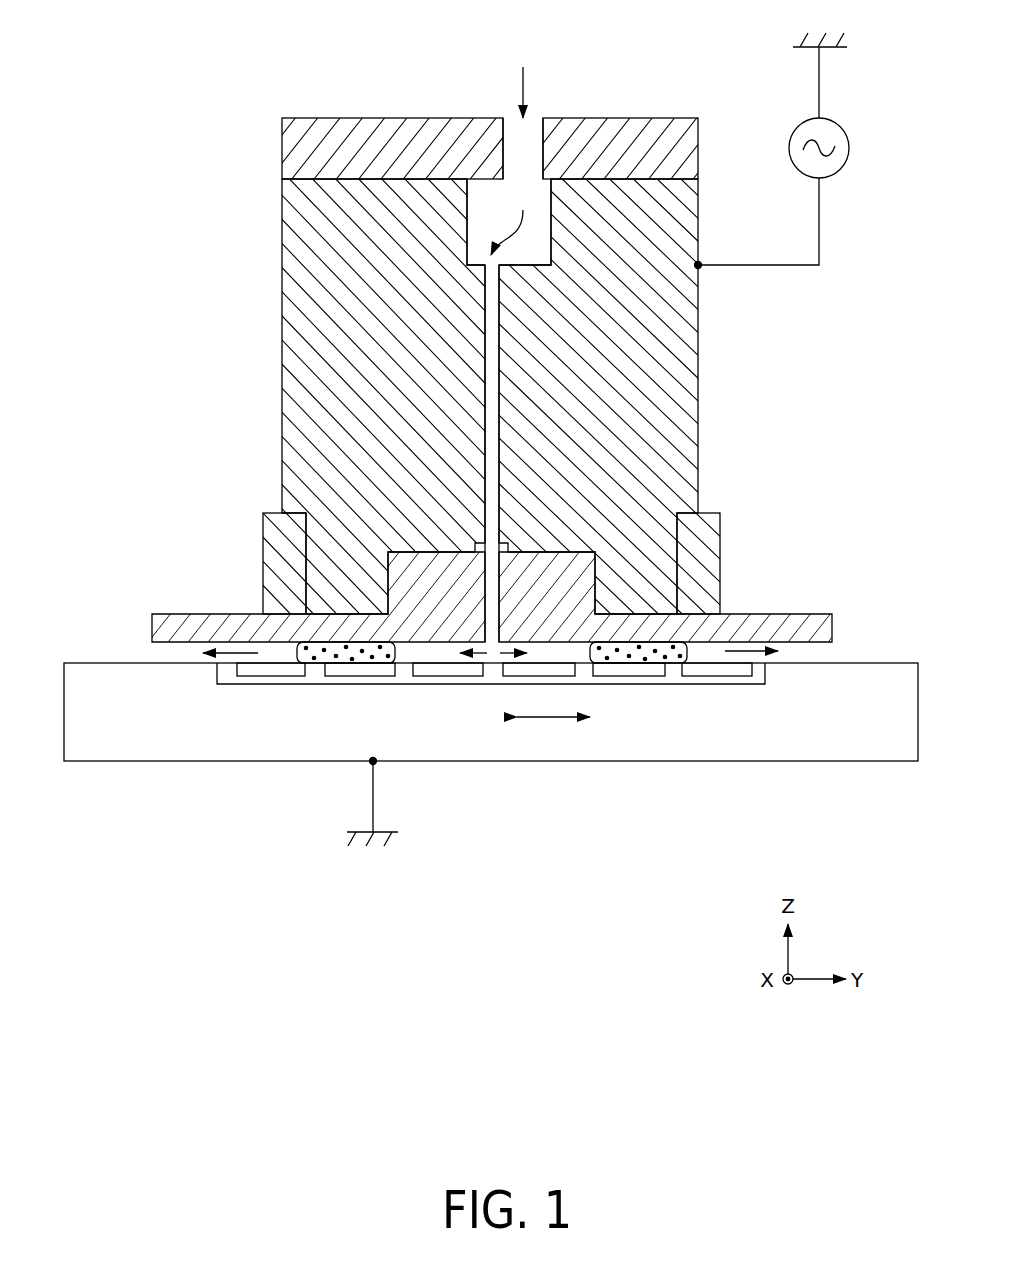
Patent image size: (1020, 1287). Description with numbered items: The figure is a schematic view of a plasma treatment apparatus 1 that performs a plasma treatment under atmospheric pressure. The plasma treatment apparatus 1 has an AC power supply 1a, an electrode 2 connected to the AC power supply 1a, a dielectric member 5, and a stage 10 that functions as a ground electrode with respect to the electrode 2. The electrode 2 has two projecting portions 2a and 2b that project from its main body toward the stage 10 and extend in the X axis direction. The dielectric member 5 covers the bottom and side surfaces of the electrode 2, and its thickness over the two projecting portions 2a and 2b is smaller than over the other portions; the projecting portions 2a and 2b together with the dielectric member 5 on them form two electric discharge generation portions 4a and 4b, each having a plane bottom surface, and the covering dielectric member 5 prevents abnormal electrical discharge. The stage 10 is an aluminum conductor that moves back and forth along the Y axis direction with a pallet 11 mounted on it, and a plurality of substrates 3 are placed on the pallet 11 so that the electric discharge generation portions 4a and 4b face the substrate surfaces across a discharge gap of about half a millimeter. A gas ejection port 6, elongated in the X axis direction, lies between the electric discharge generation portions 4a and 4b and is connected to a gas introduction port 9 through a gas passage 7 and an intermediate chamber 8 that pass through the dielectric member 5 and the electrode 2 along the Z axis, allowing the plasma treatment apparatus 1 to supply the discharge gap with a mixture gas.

The plasma treatment apparatus 1 is at (690, 90).
The AC power supply 1a is at (850, 146).
The electrode 2 is at (698, 352).
The projecting portion 2a is at (320, 598).
The projecting portion 2b is at (655, 597).
The substrate 3 is at (271, 676).
The electric discharge generation portion 4a is at (340, 660).
The electric discharge generation portion 4b is at (640, 660).
The dielectric member 5 is at (781, 617).
The gas ejection port 6 is at (497, 628).
The gas passage 7 is at (486, 372).
The intermediate chamber 8 is at (481, 192).
The gas introduction port 9 is at (535, 118).
The stage 10 is at (850, 748).
The pallet 11 is at (758, 688).